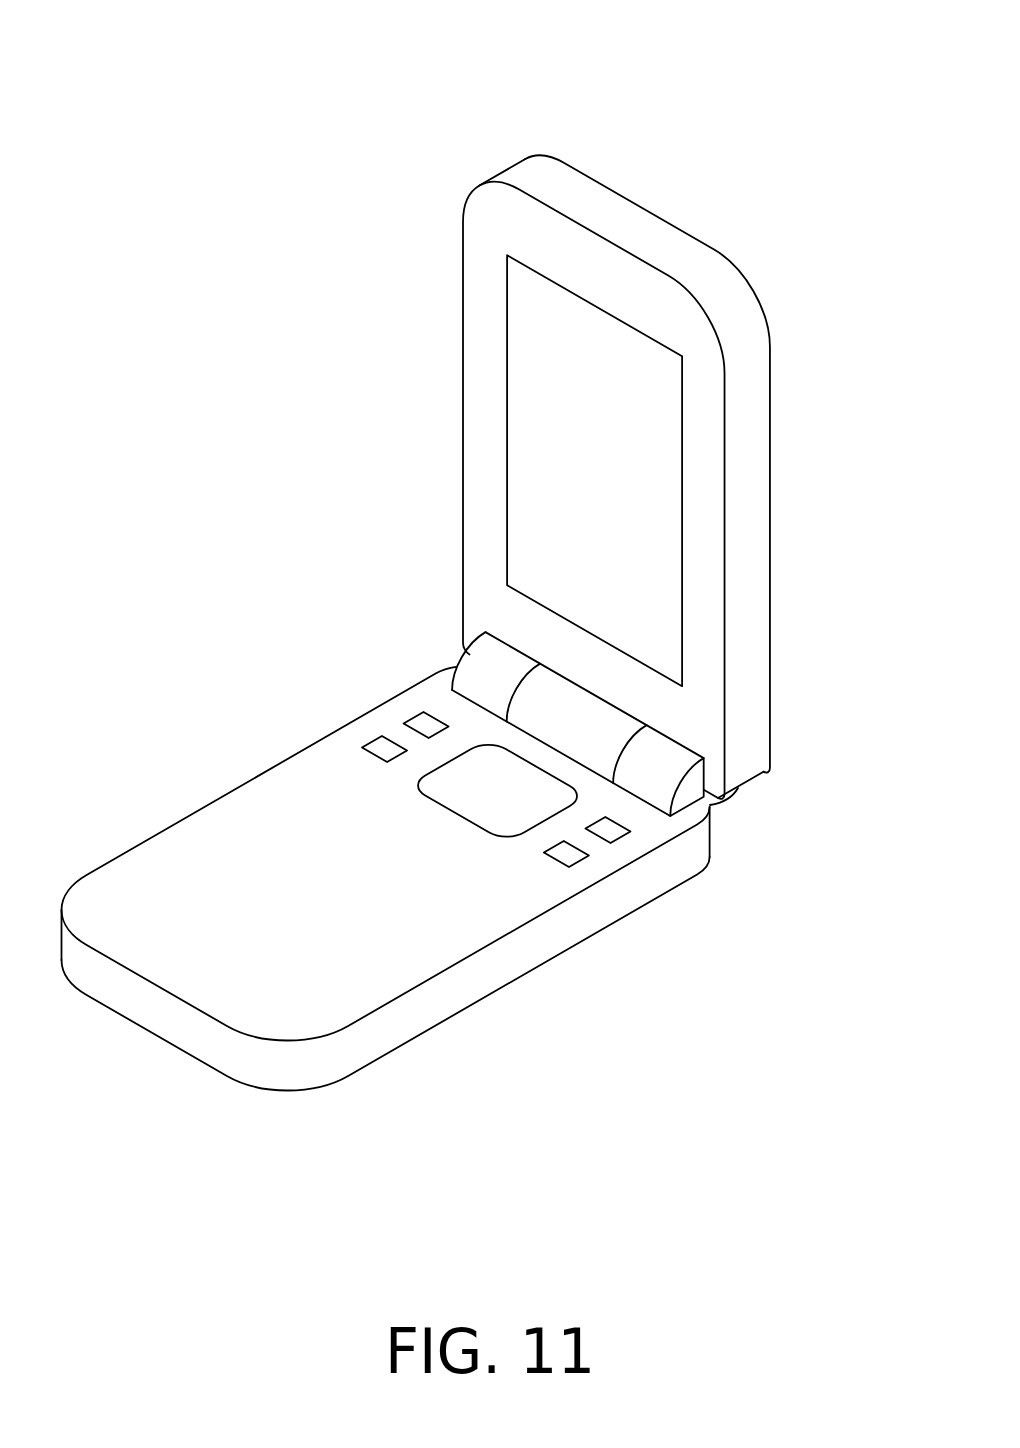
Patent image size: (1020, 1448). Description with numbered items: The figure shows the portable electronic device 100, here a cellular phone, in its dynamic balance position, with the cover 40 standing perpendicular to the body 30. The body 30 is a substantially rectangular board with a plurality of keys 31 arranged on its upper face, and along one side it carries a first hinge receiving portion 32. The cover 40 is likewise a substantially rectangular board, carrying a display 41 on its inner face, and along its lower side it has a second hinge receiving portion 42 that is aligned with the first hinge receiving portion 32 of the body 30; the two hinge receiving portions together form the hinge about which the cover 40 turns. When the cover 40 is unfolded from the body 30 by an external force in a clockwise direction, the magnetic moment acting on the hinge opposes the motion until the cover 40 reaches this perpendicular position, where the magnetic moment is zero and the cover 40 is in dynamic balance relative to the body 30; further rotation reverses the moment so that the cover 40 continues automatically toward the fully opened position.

The portable electronic device 100 is at (459, 558).
The body 30 is at (608, 905).
The keys 31 is at (383, 748).
The first hinge receiving portion 32 is at (657, 772).
The cover 40 is at (743, 565).
The display 41 is at (570, 473).
The second hinge receiving portion 42 is at (545, 708).